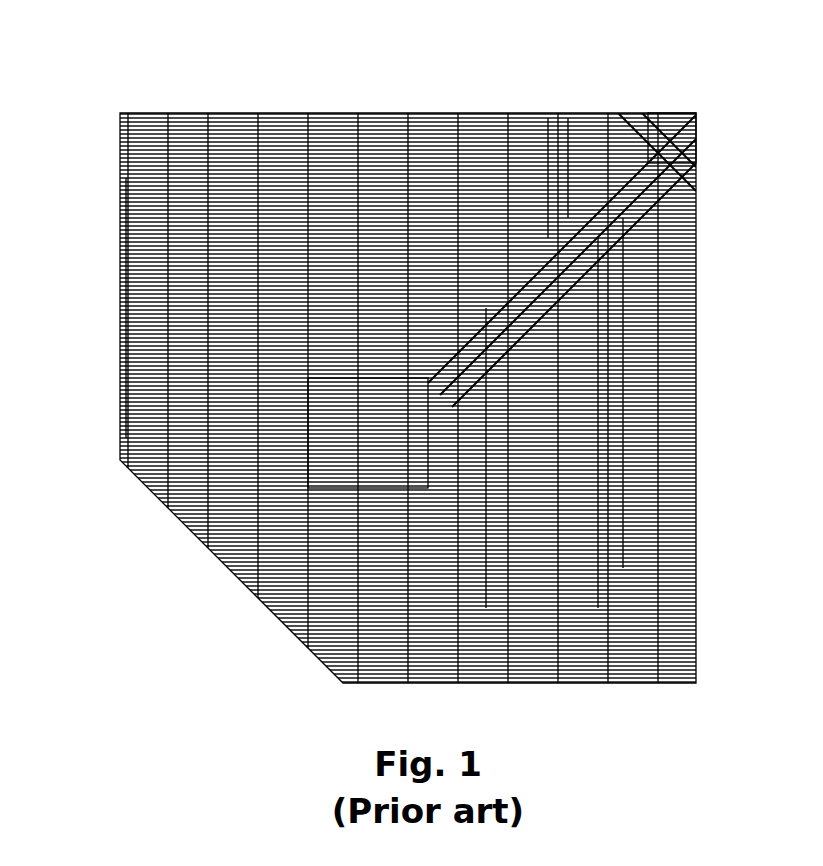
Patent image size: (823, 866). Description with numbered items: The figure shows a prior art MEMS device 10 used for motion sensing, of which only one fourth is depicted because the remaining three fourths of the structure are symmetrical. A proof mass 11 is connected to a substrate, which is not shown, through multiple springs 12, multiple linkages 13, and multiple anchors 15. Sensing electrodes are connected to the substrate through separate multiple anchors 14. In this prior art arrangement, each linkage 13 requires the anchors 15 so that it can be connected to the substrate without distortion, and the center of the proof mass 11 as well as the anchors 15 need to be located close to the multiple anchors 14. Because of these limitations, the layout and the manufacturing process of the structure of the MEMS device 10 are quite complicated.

The MEMS device 10 is at (78, 82).
The proof mass 11 is at (140, 303).
The springs 12 is at (415, 432).
The linkages 13 is at (478, 336).
The anchors 14 is at (507, 250).
The anchors 15 is at (660, 140).